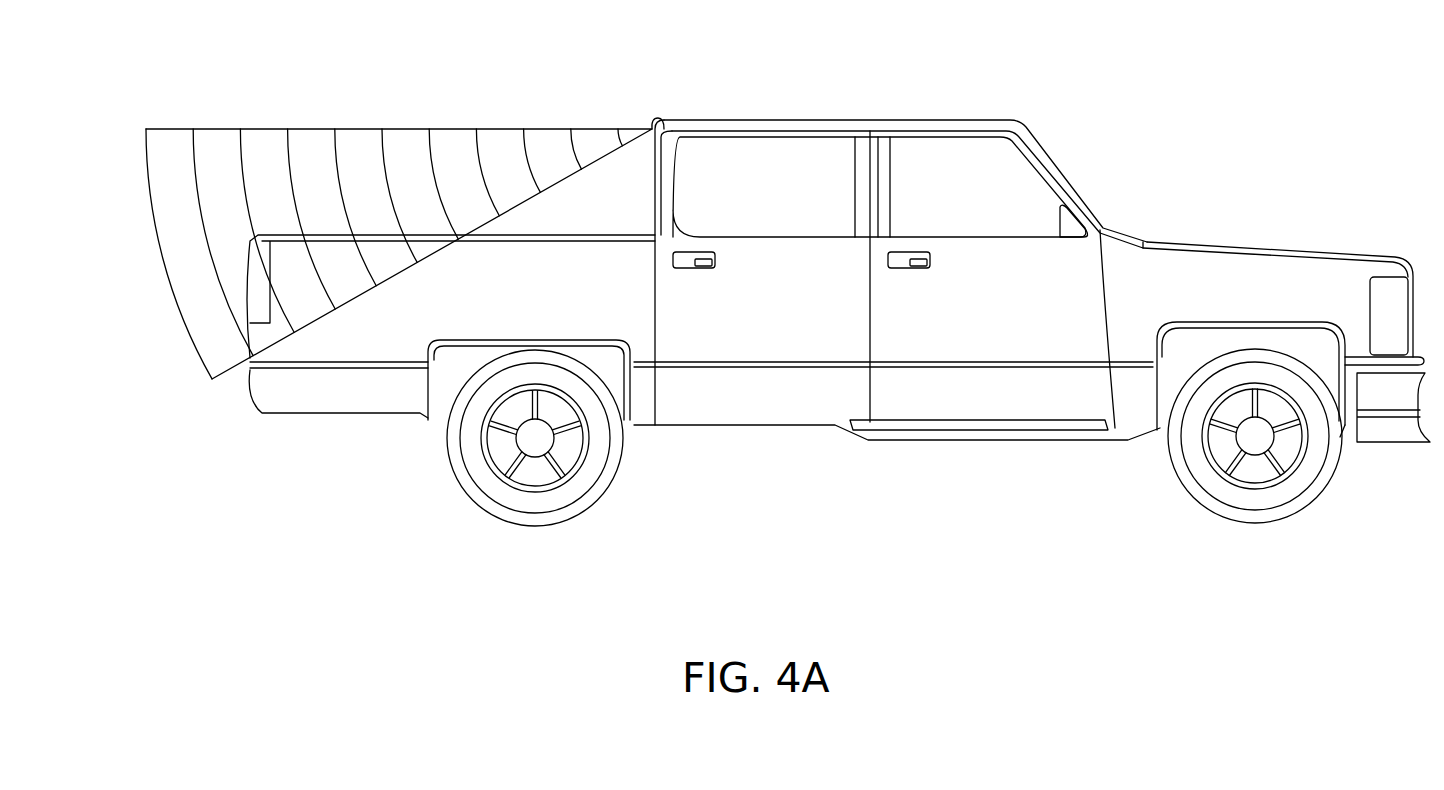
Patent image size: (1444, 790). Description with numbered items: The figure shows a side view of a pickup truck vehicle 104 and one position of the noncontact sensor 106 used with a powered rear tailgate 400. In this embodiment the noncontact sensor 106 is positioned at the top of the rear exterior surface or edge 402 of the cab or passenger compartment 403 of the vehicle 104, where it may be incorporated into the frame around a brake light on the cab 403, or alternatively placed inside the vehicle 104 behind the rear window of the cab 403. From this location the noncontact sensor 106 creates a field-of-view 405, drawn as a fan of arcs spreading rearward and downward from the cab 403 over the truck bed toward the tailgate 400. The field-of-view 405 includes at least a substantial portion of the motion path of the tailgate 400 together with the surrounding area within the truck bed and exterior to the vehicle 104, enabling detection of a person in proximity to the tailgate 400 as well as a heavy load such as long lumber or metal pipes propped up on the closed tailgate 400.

The vehicle 104 is at (838, 288).
The noncontact sensor 106 is at (654, 127).
The powered rear tailgate 400 is at (232, 280).
The rear exterior surface or edge 402 is at (668, 121).
The cab 403 is at (870, 121).
The field-of-view 405 is at (363, 222).